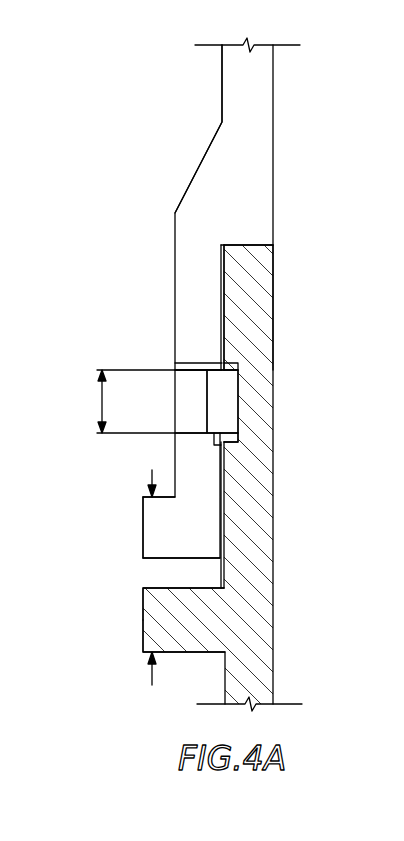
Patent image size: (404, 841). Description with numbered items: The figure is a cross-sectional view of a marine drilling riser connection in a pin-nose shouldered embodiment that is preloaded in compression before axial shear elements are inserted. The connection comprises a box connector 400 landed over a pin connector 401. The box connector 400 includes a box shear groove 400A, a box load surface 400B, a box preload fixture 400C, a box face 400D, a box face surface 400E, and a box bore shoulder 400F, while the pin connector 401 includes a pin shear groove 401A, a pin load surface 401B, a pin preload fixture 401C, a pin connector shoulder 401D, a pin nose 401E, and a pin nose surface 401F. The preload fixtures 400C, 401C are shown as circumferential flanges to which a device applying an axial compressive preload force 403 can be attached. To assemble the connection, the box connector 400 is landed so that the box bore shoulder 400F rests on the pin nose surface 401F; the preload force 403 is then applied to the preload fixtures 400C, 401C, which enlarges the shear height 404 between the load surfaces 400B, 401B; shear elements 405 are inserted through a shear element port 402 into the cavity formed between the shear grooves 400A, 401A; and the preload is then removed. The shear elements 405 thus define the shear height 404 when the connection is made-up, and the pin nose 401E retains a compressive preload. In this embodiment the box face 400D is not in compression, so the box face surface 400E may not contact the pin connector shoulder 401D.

The box connector 400 is at (269, 189).
The box shear groove 400A is at (212, 362).
The box load surface 400B is at (216, 446).
The box preload fixture 400C is at (157, 510).
The box face 400D is at (195, 538).
The box face surface 400E is at (172, 558).
The box bore shoulder 400F is at (240, 245).
The pin connector 401 is at (265, 503).
The pin shear groove 401A is at (232, 447).
The pin load surface 401B is at (237, 362).
The pin preload fixture 401C is at (157, 628).
The pin connector shoulder 401D is at (172, 590).
The pin nose 401E is at (262, 297).
The pin nose surface 401F is at (257, 246).
The shear element port 402 is at (183, 405).
The preload force 403 is at (151, 470).
The shear height 404 is at (102, 402).
The shear elements 405 is at (228, 410).